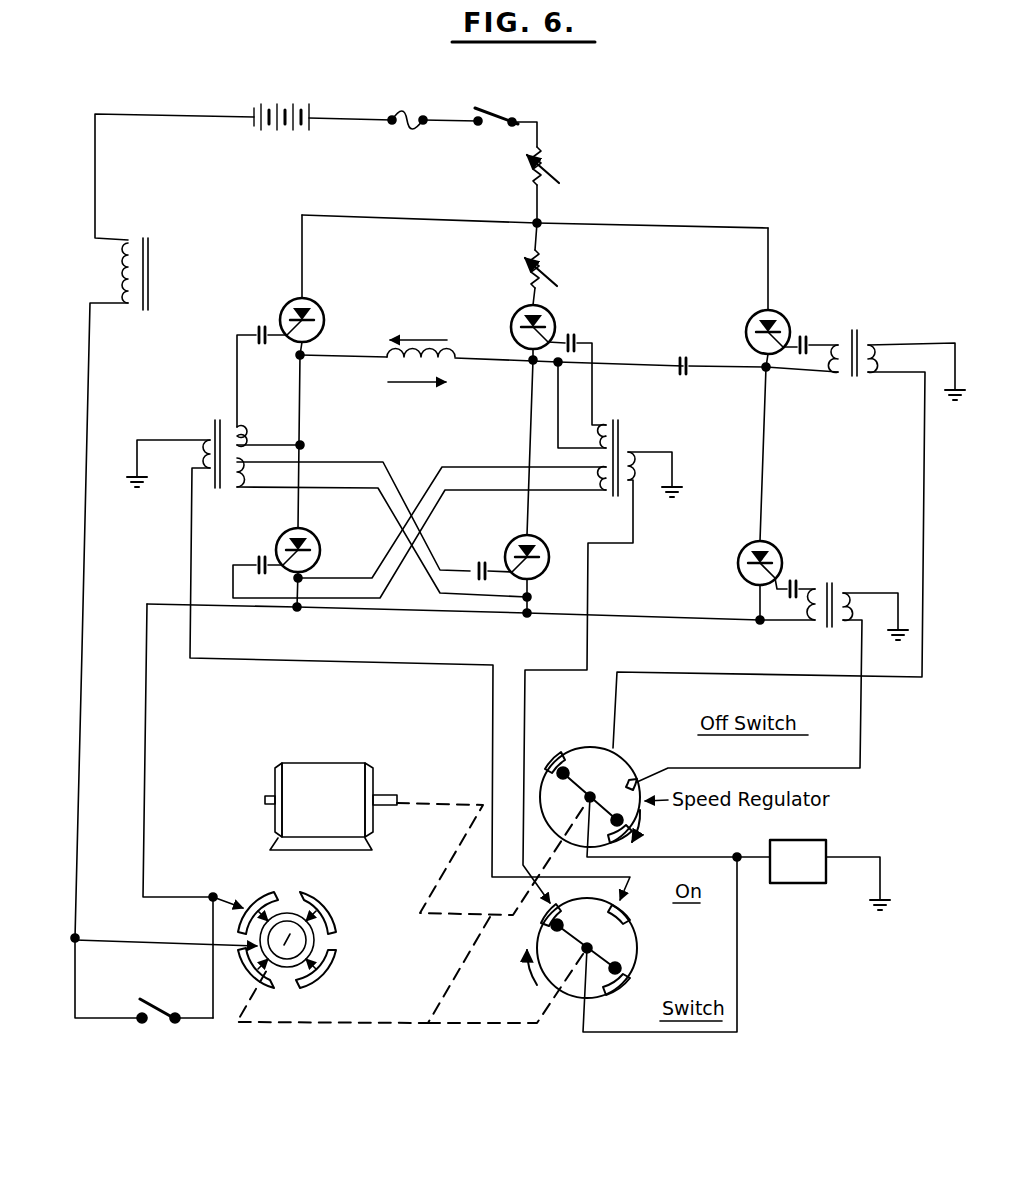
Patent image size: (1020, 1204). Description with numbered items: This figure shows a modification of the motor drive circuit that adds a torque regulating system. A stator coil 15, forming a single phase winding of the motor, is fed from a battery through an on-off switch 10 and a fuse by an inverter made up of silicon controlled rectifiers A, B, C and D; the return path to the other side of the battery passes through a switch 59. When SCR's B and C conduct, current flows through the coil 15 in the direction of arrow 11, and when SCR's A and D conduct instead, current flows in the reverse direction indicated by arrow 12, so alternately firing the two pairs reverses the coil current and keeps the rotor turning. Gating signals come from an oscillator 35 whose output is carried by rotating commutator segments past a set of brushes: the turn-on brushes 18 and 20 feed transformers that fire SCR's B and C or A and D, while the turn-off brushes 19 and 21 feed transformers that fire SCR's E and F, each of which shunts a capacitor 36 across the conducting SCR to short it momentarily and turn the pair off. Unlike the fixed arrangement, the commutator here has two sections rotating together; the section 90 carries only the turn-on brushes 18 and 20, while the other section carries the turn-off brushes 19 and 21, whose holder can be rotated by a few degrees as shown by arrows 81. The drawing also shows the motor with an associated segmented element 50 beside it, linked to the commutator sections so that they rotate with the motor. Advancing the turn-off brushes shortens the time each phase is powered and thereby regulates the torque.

The on-off switch 10 is at (493, 104).
The arrow 11 is at (432, 344).
The arrow 12 is at (424, 382).
The coil 15 is at (282, 100).
The brush 18 is at (537, 895).
The brush 19 is at (607, 745).
The brush 20 is at (624, 750).
The brush 21 is at (650, 781).
The oscillator 35 is at (802, 886).
The capacitor 36 is at (684, 354).
The stepping motor 50 is at (355, 887).
The switch 59 is at (155, 1022).
The arrows 81 is at (657, 826).
The commutator section 90 is at (558, 818).